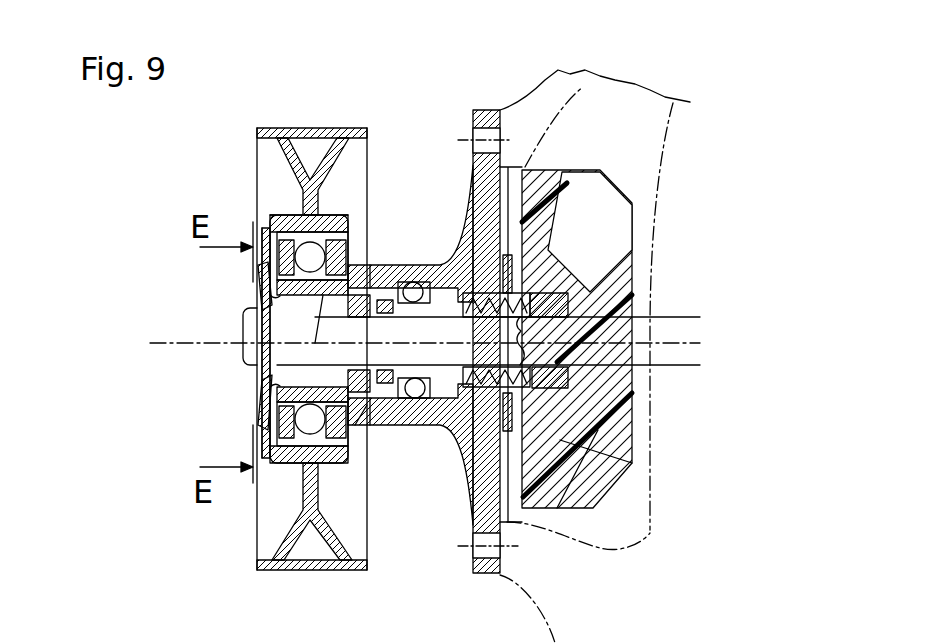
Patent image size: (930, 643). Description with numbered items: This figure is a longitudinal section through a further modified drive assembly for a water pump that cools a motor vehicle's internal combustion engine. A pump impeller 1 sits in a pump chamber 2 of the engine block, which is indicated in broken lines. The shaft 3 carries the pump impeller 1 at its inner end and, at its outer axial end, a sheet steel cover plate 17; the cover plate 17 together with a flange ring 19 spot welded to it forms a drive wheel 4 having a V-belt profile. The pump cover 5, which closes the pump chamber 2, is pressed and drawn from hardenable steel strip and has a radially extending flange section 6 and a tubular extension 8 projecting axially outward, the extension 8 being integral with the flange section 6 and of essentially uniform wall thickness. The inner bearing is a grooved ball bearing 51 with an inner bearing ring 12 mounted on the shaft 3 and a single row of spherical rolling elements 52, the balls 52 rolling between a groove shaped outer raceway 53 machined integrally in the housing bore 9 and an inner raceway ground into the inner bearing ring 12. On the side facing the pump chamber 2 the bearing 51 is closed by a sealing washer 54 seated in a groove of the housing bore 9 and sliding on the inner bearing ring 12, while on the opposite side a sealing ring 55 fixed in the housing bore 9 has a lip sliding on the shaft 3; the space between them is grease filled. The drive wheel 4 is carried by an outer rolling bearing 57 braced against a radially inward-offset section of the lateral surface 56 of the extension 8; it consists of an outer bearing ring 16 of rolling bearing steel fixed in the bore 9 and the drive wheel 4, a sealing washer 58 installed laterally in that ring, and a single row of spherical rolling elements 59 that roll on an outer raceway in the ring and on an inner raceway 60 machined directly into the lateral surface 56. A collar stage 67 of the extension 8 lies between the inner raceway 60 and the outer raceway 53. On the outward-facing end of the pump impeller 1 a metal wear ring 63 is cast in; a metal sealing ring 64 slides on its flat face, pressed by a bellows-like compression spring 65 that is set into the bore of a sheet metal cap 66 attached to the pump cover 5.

The pump impeller 1 is at (610, 365).
The pump chamber 2 is at (632, 514).
The shaft 3 is at (293, 333).
The drive wheel 4 is at (304, 132).
The pump cover 5 is at (495, 438).
The flange section 6 is at (473, 523).
The tubular extension 8 is at (355, 563).
The housing bore 9 is at (315, 343).
The inner bearing ring 12 is at (410, 400).
The outer bearing ring 16 is at (305, 255).
The cover plate 17 is at (258, 420).
The flange ring 19 is at (347, 130).
The grooved ball bearing 51 is at (411, 264).
The spherical rolling elements 52 is at (420, 398).
The outer raceway 53 is at (585, 330).
The sealing washer 54 is at (424, 293).
The sealing ring 55 is at (290, 475).
The lateral surface 56 is at (372, 262).
The rolling bearing 57 is at (302, 480).
The sealing washer 58 is at (258, 438).
The spherical rolling elements 59 is at (280, 122).
The inner raceway 60 is at (258, 385).
The wear ring 63 is at (568, 303).
The sealing ring 64 is at (630, 220).
The compression spring 65 is at (632, 205).
The sheet metal cap 66 is at (600, 170).
The collar stage 67 is at (367, 405).